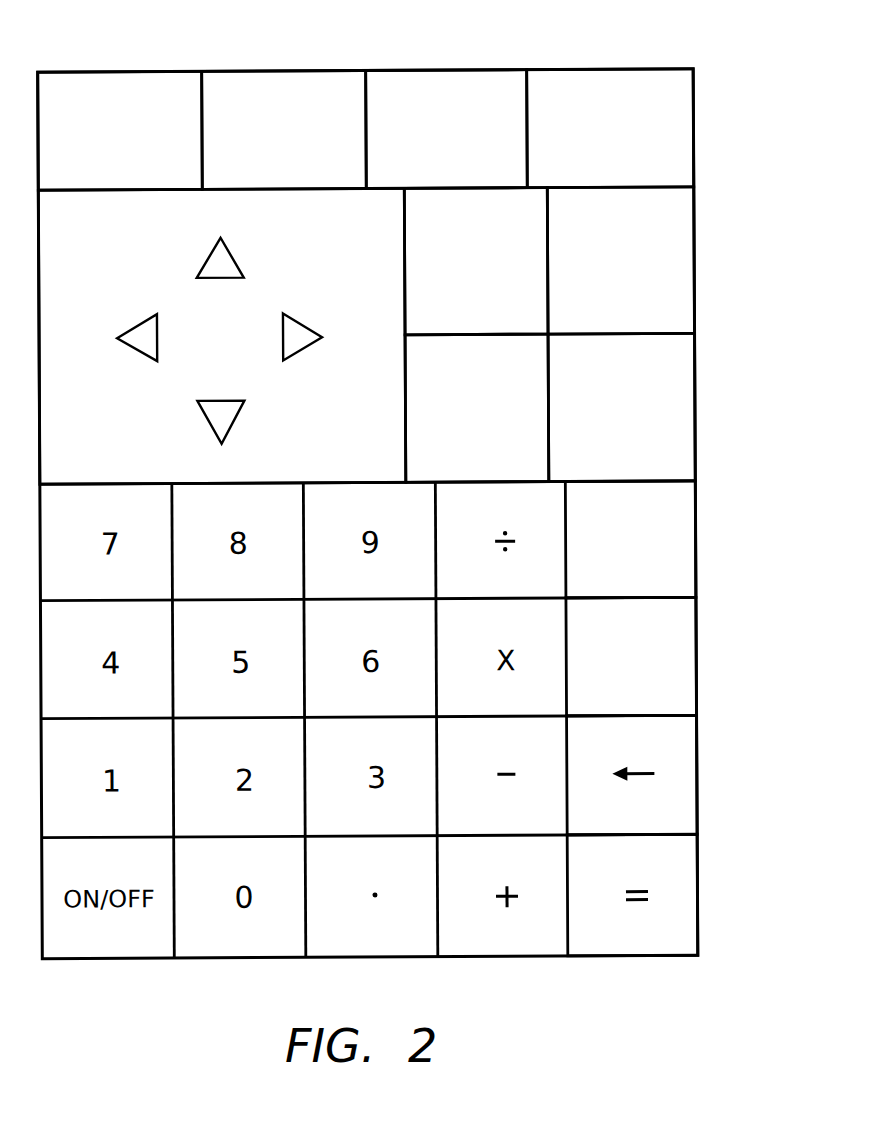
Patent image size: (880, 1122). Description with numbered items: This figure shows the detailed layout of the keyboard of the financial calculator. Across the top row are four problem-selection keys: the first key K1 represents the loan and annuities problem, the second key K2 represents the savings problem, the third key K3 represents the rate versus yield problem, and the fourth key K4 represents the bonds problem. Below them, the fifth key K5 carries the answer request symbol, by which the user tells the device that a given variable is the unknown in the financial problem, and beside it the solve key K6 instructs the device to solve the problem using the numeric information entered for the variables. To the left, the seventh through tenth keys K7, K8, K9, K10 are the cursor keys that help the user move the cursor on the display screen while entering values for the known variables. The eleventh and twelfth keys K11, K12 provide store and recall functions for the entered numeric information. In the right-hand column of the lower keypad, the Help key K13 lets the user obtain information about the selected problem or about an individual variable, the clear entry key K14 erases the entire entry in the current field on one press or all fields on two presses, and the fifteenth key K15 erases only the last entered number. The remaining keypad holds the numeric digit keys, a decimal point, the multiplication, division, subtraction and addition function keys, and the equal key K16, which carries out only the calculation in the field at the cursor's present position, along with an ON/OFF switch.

The first key K1 is at (123, 86).
The second key K2 is at (272, 88).
The third key K3 is at (413, 88).
The fourth key K4 is at (596, 85).
The fifth key K5 is at (422, 263).
The solve key K6 is at (680, 231).
The seventh key K7 is at (199, 268).
The eighth key K8 is at (128, 344).
The ninth key K9 is at (284, 350).
The tenth key K10 is at (215, 435).
The eleventh key K11 is at (422, 412).
The twelfth key K12 is at (680, 372).
The Help key K13 is at (680, 513).
The clear entry key K14 is at (683, 628).
The fifteenth key K15 is at (687, 747).
The equal key K16 is at (687, 867).